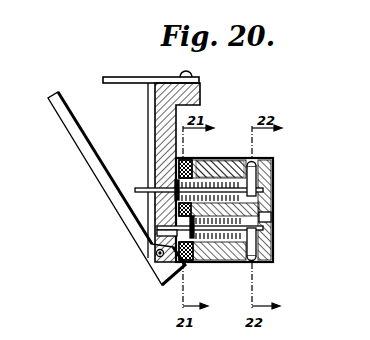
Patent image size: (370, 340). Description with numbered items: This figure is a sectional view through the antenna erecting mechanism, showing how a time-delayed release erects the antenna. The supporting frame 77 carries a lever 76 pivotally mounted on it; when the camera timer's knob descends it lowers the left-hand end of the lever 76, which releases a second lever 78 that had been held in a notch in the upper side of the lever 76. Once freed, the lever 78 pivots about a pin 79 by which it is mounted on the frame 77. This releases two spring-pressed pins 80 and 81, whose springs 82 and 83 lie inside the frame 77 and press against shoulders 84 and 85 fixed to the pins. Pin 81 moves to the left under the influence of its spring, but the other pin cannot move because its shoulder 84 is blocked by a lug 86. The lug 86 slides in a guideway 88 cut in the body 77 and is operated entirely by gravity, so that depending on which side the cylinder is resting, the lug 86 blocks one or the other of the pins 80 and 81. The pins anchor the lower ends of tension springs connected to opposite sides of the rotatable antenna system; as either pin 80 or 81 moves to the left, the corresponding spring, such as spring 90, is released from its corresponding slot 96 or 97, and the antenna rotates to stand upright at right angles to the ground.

The lever 76 is at (139, 76).
The supporting frame 77 is at (275, 163).
The lever 78 is at (78, 145).
The pin 79 is at (156, 256).
The spring-pressed pin 80 is at (157, 228).
The spring-pressed pin 81 is at (142, 190).
The spring 82 is at (216, 260).
The spring 83 is at (223, 161).
The shoulder 84 is at (192, 260).
The shoulder 85 is at (193, 162).
The lug 86 is at (153, 236).
The guideway 88 is at (178, 218).
The spring 90 is at (272, 218).
The slot 96 is at (272, 244).
The slot 97 is at (272, 186).